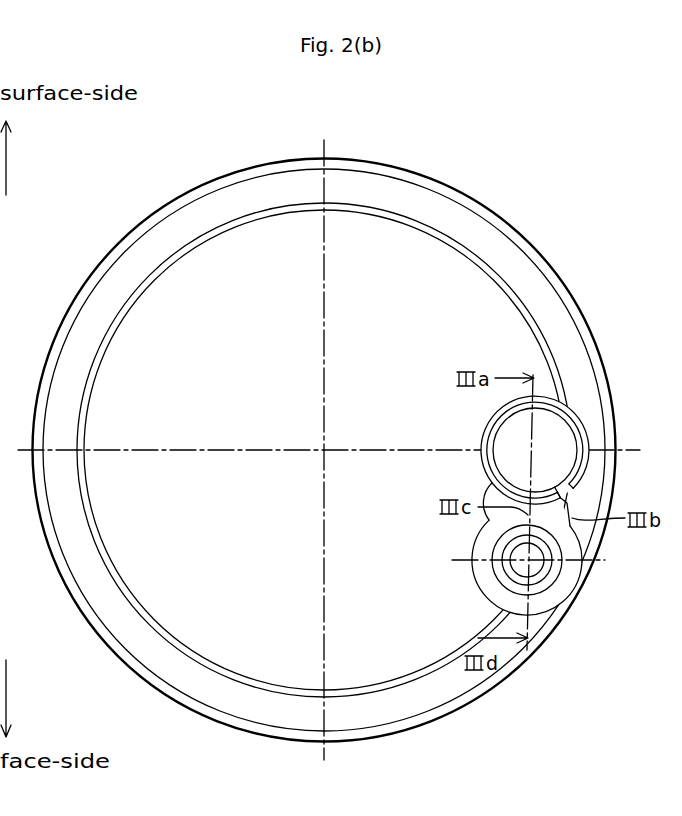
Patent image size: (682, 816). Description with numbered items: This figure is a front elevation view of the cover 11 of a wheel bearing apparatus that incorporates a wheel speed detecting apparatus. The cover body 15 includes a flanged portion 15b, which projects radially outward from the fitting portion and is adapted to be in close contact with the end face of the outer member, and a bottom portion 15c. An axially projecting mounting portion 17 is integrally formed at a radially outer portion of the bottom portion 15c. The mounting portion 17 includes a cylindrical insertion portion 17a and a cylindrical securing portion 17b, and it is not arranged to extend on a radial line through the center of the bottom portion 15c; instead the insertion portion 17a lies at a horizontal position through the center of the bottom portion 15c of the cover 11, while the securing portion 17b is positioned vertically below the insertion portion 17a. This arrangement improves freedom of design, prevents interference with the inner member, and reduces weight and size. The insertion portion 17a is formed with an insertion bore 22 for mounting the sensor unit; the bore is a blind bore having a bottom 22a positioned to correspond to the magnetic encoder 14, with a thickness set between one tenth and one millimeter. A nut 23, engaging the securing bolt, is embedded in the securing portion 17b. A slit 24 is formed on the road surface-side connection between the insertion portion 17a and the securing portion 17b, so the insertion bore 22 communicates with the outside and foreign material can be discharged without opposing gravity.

The cover 11 is at (523, 200).
The magnetic encoder 14 is at (320, 452).
The cover body 15 is at (478, 191).
The flanged portion 15b is at (243, 185).
The bottom portion 15c is at (268, 633).
The mounting portion 17 is at (586, 405).
The insertion portion 17a is at (487, 427).
The securing portion 17b is at (472, 548).
The insertion bore 22 is at (522, 464).
The bottom 22a is at (550, 437).
The nut 23 is at (492, 568).
The slit 24 is at (570, 493).